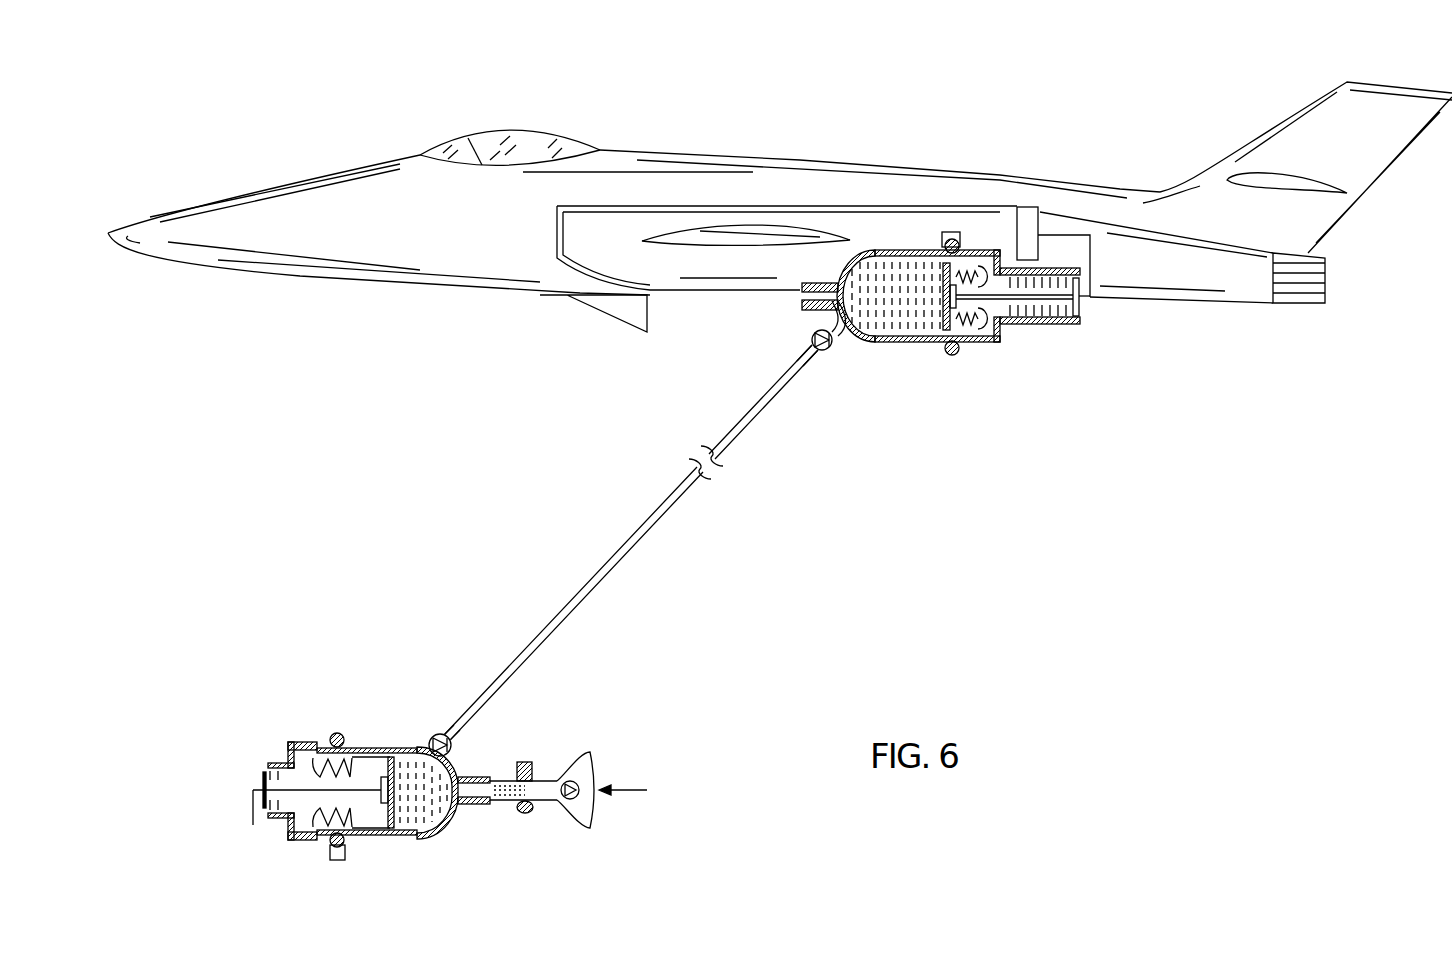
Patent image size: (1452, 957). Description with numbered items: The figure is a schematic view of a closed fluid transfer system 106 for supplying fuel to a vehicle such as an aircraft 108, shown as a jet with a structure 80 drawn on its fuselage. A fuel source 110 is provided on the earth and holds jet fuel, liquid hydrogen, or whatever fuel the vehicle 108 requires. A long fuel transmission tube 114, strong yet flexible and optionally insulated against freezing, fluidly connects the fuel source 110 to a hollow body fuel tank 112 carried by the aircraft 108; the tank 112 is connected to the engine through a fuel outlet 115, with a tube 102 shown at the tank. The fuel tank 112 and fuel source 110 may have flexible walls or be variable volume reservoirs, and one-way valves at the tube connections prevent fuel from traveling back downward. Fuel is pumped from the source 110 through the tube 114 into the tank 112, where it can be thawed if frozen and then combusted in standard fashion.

The aircraft fuselage 80 is at (882, 148).
The tube 102 is at (848, 330).
The closed fluid transfer system 106 is at (300, 148).
The aircraft 108 is at (620, 148).
The fuel source 110 is at (210, 835).
The fuel tank 112 is at (905, 345).
The fuel transmission tube 114 is at (543, 627).
The fuel outlet 115 is at (843, 262).